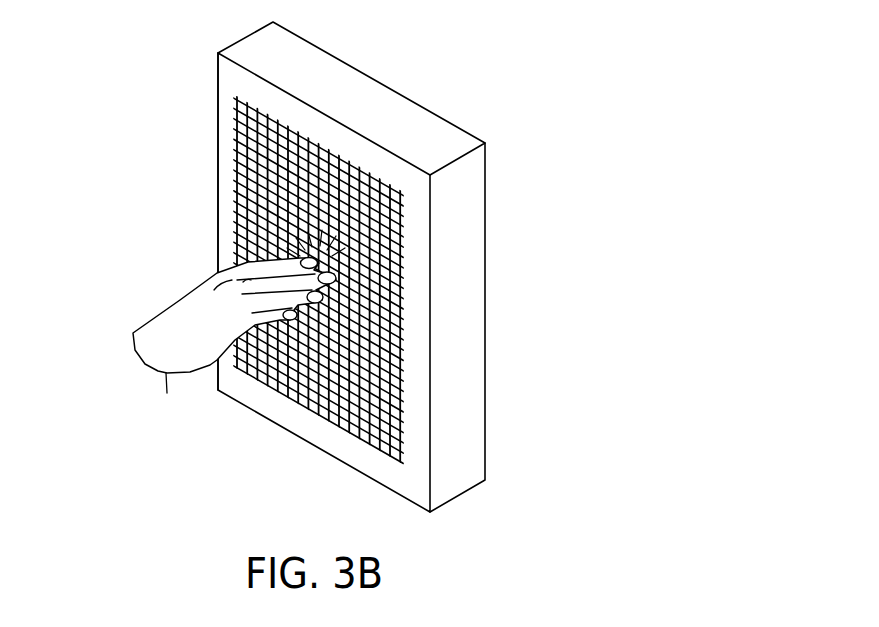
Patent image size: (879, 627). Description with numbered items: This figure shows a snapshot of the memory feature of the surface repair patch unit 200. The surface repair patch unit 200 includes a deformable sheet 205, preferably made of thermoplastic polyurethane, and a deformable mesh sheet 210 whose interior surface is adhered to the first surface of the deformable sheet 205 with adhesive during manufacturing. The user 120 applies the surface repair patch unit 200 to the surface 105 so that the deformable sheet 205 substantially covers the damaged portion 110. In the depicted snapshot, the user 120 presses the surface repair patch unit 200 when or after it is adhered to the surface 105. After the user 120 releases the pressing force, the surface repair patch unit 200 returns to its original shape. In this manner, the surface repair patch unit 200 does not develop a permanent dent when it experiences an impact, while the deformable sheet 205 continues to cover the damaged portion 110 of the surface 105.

The surface repair patch unit 200 is at (236, 82).
The surface 105 is at (230, 118).
The deformable mesh sheet 210 is at (240, 196).
The deformable sheet 205 is at (354, 168).
The damaged portion 110 is at (399, 262).
The user 120 is at (180, 302).